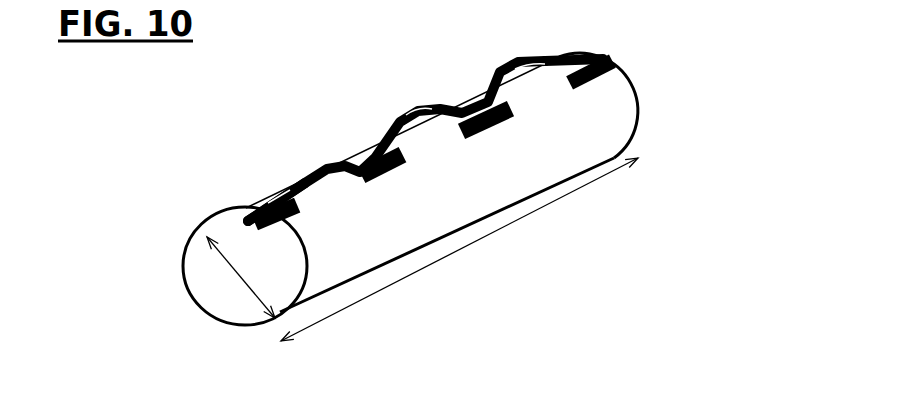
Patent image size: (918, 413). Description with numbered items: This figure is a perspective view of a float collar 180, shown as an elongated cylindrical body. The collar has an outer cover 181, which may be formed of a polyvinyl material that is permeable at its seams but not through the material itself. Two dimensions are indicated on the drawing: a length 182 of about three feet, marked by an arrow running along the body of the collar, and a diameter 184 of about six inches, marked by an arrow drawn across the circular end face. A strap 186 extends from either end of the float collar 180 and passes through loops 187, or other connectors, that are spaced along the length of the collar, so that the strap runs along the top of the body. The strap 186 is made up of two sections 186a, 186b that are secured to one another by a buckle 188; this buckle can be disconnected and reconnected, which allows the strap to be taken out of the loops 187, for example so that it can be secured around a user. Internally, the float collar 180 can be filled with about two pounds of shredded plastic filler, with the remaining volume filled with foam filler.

The float collar 180 is at (245, 218).
The outer cover 181 is at (627, 105).
The length 182 is at (583, 188).
The diameter 184 is at (247, 287).
The strap 186 is at (350, 165).
The first strap section 186a is at (320, 172).
The second strap section 186b is at (537, 60).
The loops 187 is at (385, 165).
The buckle 188 is at (420, 105).